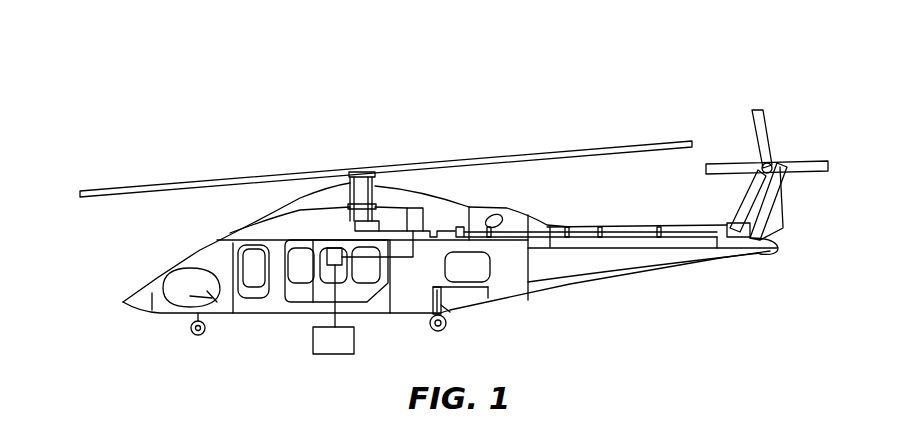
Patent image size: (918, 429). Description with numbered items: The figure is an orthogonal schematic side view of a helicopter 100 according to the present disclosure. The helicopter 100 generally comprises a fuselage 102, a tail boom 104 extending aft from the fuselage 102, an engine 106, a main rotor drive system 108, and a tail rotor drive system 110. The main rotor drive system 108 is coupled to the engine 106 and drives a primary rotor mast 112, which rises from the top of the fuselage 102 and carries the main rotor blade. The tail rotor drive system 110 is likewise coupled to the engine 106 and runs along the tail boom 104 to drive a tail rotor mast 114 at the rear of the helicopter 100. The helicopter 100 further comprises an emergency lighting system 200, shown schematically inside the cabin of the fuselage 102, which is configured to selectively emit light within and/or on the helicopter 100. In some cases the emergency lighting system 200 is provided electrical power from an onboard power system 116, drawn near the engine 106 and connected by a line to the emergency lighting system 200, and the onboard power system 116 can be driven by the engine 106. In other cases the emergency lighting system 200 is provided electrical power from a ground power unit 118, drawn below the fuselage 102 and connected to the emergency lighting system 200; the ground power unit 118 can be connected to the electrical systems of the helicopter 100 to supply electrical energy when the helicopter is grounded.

The helicopter 100 is at (454, 193).
The fuselage 102 is at (228, 229).
The tail boom 104 is at (607, 280).
The engine 106 is at (444, 212).
The main rotor drive system 108 is at (404, 215).
The tail rotor drive system 110 is at (627, 220).
The primary rotor mast 112 is at (323, 172).
The tail rotor mast 114 is at (762, 164).
The onboard power system 116 is at (415, 207).
The ground power unit 118 is at (313, 347).
The emergency lighting system 200 is at (312, 252).